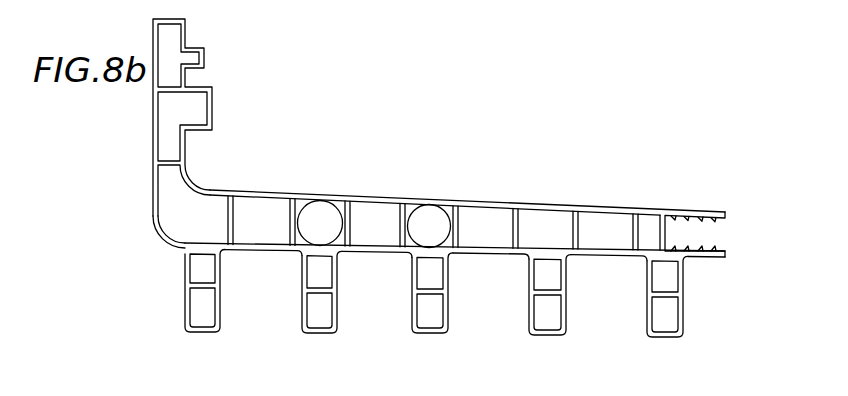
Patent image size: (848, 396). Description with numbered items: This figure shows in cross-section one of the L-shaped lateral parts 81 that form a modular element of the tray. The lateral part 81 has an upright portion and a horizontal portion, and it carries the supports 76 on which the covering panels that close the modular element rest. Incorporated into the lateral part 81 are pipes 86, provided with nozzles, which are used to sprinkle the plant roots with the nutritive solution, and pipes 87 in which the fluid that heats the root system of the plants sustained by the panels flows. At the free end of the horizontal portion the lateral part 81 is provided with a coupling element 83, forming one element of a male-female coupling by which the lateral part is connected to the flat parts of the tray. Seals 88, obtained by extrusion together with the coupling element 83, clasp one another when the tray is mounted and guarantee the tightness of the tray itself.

The support 76 is at (188, 47).
The L-shaped lateral part 81 is at (262, 190).
The coupling element 83 is at (715, 232).
The pipe 86 is at (322, 218).
The pipe 87 is at (428, 223).
The seal 88 is at (677, 221).